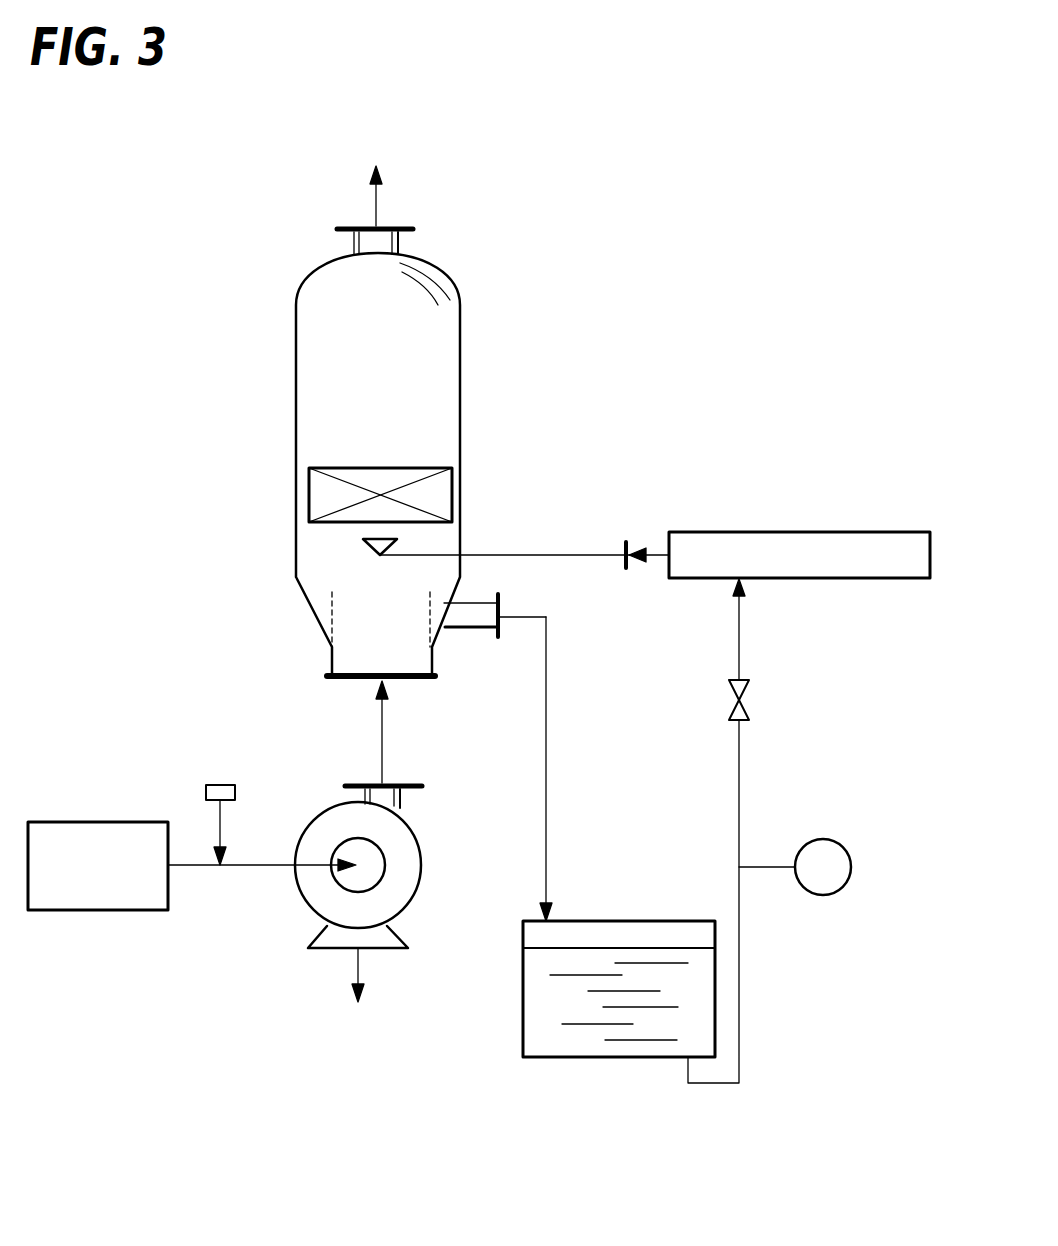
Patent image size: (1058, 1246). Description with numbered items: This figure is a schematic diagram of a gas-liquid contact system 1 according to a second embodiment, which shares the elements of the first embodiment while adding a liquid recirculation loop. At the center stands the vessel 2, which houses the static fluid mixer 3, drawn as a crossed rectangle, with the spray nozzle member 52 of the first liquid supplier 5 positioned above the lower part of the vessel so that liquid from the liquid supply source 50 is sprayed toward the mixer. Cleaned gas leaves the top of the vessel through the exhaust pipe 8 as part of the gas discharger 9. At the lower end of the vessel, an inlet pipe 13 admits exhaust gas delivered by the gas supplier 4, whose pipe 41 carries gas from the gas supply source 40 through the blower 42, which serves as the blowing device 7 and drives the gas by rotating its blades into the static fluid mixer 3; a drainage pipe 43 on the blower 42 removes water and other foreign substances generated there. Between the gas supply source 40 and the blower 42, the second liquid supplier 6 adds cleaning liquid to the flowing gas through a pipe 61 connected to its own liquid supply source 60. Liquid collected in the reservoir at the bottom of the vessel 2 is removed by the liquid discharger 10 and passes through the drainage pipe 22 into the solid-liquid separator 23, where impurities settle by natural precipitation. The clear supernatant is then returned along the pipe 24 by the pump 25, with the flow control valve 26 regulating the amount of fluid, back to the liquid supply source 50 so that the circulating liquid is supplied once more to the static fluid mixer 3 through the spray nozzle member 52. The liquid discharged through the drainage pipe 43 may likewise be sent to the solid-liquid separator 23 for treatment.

The gas-liquid contact system 1 is at (512, 148).
The vessel 2 is at (462, 355).
The static fluid mixer 3 is at (327, 483).
The gas supplier 4 is at (372, 812).
The first liquid supplier 5 is at (568, 528).
The second liquid supplier 6 is at (200, 788).
The blowing device 7 is at (280, 998).
The exhaust pipe 8 is at (387, 240).
The gas discharger 9 is at (285, 160).
The liquid discharger 10 is at (545, 601).
The inlet pipe 13 is at (335, 618).
The drainage pipe 22 is at (550, 782).
The solid-liquid separator 23 is at (578, 1057).
The pipe 24 is at (740, 782).
The pump 25 is at (823, 895).
The flow control valve 26 is at (747, 695).
The gas supply source 40 is at (73, 910).
The pipe 41 is at (384, 758).
The blower 42 is at (400, 840).
The drainage pipe 43 is at (360, 960).
The liquid supply source 50 is at (817, 532).
The spray nozzle member 52 is at (350, 548).
The liquid supply source 60 is at (220, 785).
The pipe 61 is at (223, 832).